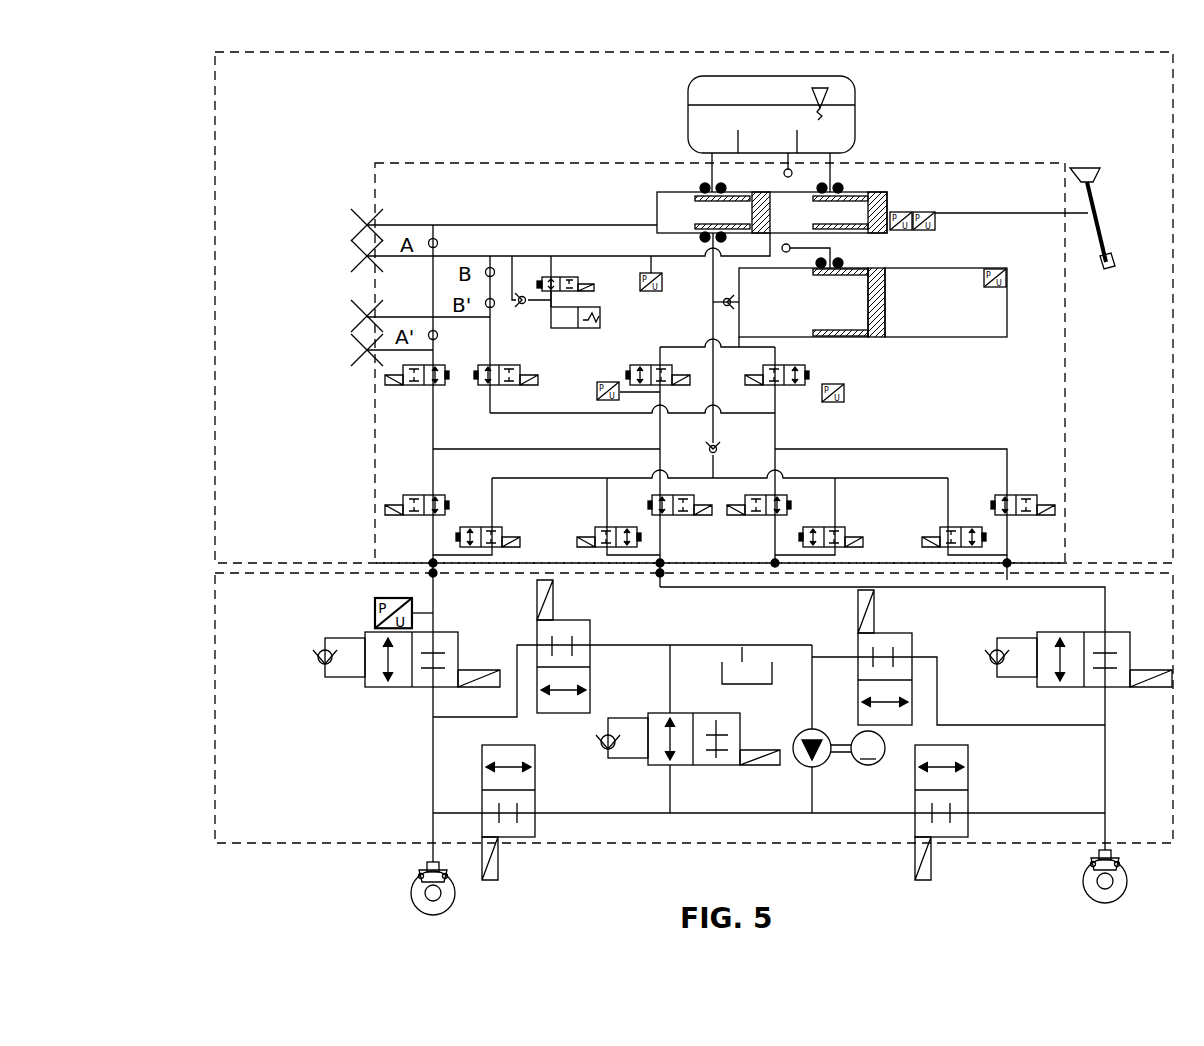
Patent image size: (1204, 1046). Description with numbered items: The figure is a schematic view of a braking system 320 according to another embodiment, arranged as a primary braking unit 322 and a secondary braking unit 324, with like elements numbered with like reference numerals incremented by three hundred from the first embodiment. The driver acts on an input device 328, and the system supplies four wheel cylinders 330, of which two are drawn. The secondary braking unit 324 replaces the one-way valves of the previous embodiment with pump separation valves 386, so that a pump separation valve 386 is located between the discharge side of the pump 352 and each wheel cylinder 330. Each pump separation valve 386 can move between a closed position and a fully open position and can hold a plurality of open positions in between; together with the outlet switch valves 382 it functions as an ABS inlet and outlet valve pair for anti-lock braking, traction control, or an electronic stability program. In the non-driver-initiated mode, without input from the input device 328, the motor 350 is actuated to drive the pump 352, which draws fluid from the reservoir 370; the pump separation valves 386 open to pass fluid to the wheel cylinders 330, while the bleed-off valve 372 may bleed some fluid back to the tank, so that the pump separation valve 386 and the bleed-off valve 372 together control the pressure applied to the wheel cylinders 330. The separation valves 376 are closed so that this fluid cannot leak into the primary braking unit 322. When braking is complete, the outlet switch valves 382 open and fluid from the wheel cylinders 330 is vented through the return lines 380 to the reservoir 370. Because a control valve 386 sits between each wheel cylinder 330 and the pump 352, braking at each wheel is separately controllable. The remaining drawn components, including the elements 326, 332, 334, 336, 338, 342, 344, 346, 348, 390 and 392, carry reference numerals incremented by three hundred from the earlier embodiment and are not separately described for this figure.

The braking system 320 is at (428, 42).
The primary braking unit 322 is at (570, 162).
The secondary braking unit 324 is at (215, 680).
The reservoir 326 is at (857, 100).
The input device 328 is at (1108, 280).
The wheel cylinder 330 is at (447, 870).
The master brake cylinder 332 is at (657, 207).
The pressure supply device 334 is at (899, 328).
The piston 336 is at (850, 337).
The electric motor 338 is at (960, 337).
The pressure control valve 342 is at (598, 318).
The inlet valve 344 is at (398, 512).
The outlet valve 346 is at (500, 527).
The isolation valve 348 is at (398, 383).
The motor 350 is at (862, 765).
The pump 352 is at (815, 770).
The reservoir 370 is at (750, 684).
The bleed-off valve 372 is at (710, 768).
The separation valve 376 is at (400, 690).
The return line 380 is at (470, 717).
The outlet switch valve 382 is at (590, 655).
The pump separation valve 386 is at (535, 783).
The hydraulic connection 390 is at (433, 563).
The hydraulic connection 392 is at (433, 573).